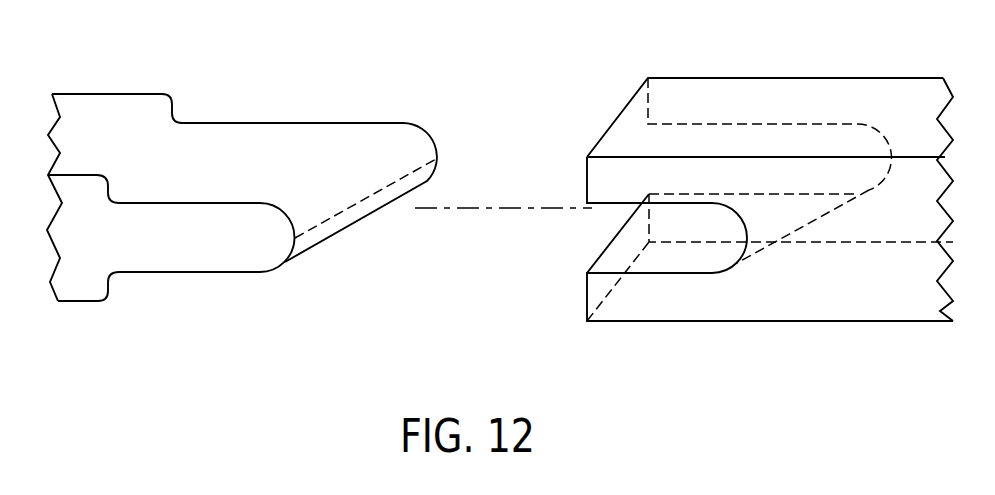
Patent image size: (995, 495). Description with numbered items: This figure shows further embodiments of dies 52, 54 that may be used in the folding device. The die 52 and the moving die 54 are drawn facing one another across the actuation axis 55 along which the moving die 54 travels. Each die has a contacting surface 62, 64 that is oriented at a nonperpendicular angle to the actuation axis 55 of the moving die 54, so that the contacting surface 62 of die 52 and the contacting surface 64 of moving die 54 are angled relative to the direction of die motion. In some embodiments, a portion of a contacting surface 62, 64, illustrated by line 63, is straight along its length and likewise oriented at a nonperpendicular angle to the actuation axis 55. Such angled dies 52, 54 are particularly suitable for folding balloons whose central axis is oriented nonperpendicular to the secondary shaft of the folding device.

The die 52 is at (269, 173).
The moving die 54 is at (770, 173).
The actuation axis 55 is at (530, 208).
The contacting surface 62 is at (431, 147).
The line 63 is at (327, 222).
The contacting surface 64 is at (832, 210).